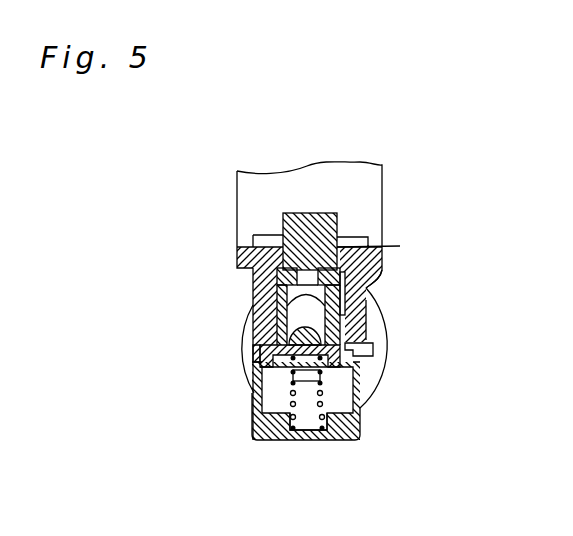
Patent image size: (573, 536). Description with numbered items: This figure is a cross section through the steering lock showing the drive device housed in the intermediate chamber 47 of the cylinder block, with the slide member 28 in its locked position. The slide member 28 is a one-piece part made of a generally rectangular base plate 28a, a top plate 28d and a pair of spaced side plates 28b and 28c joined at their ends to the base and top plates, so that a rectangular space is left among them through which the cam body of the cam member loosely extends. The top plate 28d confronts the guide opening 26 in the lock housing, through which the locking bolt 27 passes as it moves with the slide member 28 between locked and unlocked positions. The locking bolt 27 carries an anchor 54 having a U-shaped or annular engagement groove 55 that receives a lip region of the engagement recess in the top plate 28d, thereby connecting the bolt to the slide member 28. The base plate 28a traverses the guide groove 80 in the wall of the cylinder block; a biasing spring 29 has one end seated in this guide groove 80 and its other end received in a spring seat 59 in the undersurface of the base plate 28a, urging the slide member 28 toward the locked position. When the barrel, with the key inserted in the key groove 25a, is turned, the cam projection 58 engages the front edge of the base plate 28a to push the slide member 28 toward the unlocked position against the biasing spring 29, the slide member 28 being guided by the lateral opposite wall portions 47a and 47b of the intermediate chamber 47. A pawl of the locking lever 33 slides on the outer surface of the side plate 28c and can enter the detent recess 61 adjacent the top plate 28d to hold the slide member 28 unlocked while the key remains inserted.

The key groove 25a is at (307, 383).
The guide opening 26 is at (380, 247).
The locking bolt 27 is at (301, 213).
The slide member 28 is at (257, 283).
The base plate 28a is at (372, 392).
The side plate 28b is at (258, 346).
The side plate 28c is at (366, 327).
The top plate 28d is at (302, 222).
The biasing spring 29 is at (364, 407).
The locking lever 33 is at (374, 346).
The intermediate chamber 47 is at (268, 381).
The lateral wall portion 47a is at (347, 305).
The lateral wall portion 47b is at (276, 275).
The anchor 54 is at (283, 300).
The engagement groove 55 is at (314, 258).
The cam projection 58 is at (290, 306).
The spring seat 59 is at (292, 375).
The detent recess 61 is at (367, 291).
The guide groove 80 is at (305, 415).